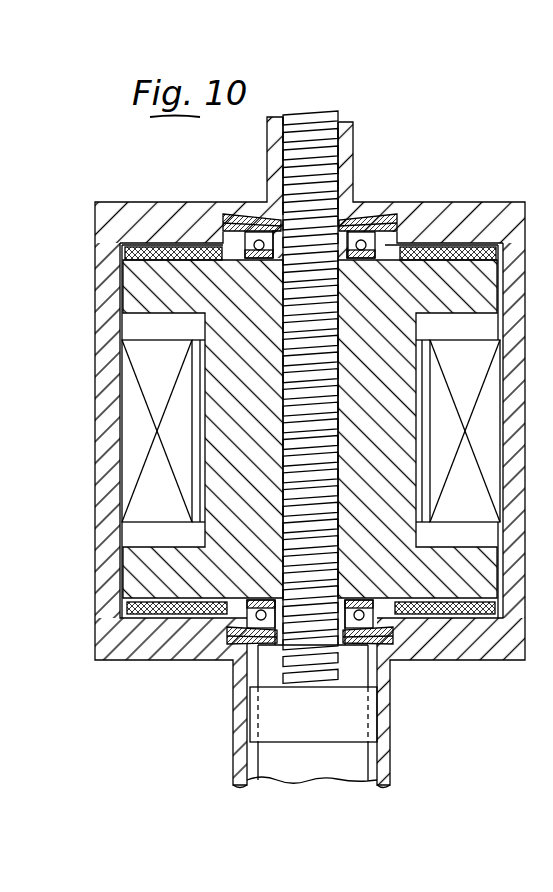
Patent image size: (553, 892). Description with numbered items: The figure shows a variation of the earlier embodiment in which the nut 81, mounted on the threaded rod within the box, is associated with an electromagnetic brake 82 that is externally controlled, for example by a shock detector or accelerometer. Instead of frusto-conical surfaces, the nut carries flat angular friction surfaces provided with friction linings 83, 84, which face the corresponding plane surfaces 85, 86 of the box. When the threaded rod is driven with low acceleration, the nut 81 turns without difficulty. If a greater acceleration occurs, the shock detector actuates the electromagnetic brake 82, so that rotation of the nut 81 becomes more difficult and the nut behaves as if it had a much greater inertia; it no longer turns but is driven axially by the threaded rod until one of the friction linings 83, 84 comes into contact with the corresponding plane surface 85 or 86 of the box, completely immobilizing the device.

The nut 81 is at (143, 287).
The electromagnetic brake 82 is at (132, 437).
The friction lining 83 is at (458, 258).
The friction lining 84 is at (478, 620).
The plane surface of the box 85 is at (418, 242).
The plane surface of the box 86 is at (437, 618).